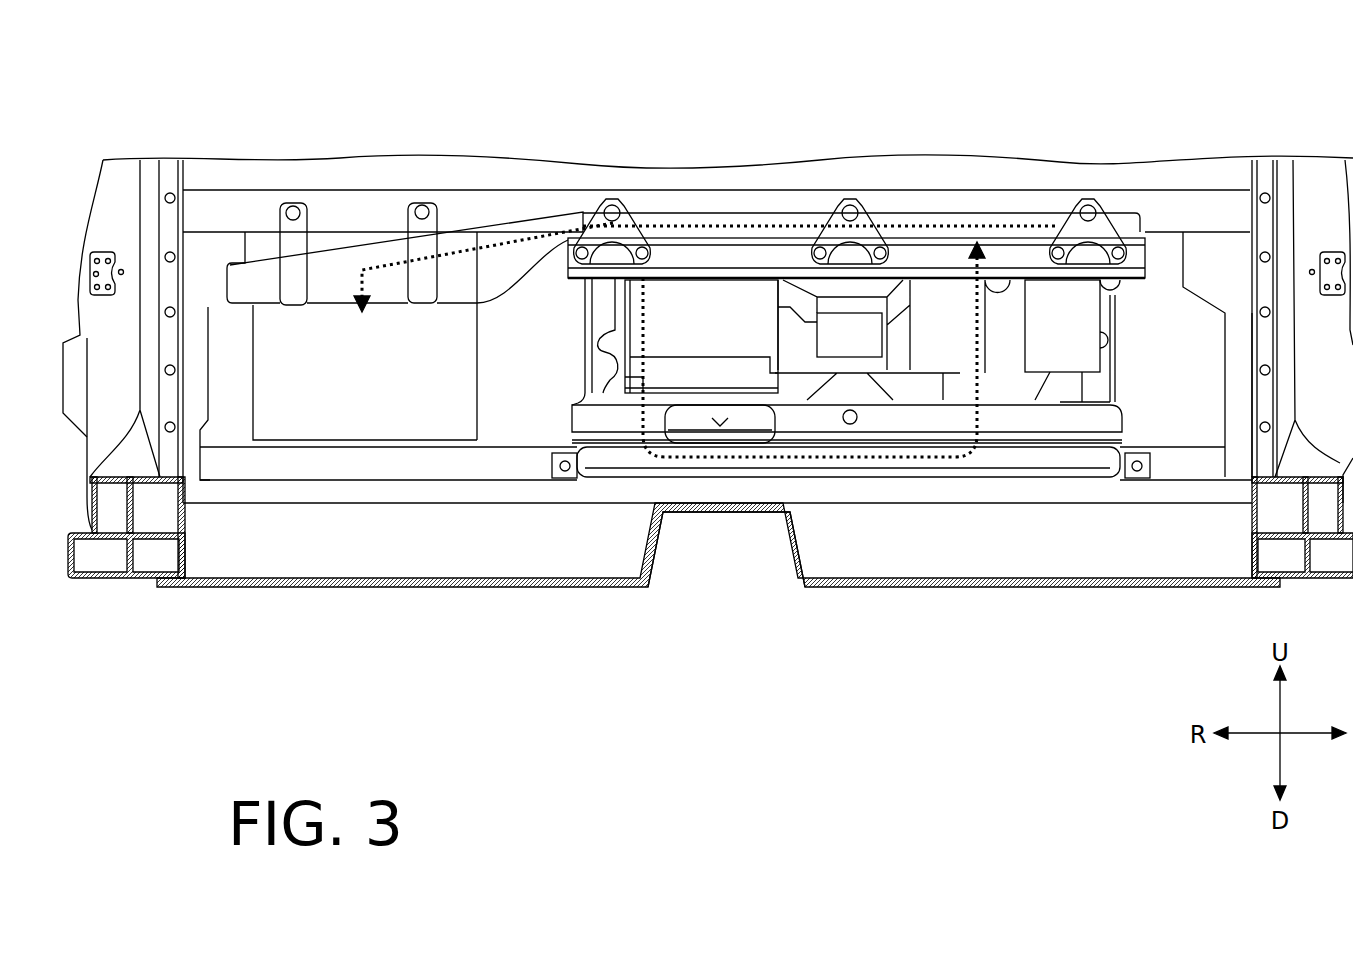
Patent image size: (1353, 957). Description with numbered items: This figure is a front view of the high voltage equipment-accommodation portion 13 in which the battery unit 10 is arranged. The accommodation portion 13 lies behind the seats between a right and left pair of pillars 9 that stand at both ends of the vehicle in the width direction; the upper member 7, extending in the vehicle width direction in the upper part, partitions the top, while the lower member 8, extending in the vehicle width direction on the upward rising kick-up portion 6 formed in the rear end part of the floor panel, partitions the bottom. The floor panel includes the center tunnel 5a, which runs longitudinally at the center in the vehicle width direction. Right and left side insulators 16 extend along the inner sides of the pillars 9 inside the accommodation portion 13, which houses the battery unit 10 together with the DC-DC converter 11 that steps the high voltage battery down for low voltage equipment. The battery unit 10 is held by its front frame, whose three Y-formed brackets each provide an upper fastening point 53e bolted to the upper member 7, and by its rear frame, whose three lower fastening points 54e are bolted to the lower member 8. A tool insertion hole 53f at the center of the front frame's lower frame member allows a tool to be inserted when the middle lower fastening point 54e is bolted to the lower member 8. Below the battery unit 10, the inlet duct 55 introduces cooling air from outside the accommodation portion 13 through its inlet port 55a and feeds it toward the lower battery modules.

The center tunnel 5a is at (655, 548).
The kick-up portion 6 is at (398, 548).
The upper member 7 is at (463, 187).
The lower member 8 is at (218, 470).
The pillars 9 is at (135, 172).
The battery unit 10 is at (1122, 325).
The DC-DC converter 11 is at (320, 423).
The high voltage equipment-accommodation portion 13 is at (520, 415).
The side insulators 16 is at (205, 278).
The upper fastening point 53e is at (612, 205).
The tool insertion hole 53f is at (857, 417).
The lower fastening points 54e is at (565, 478).
The inlet duct 55 is at (1035, 473).
The inlet port 55a is at (748, 422).